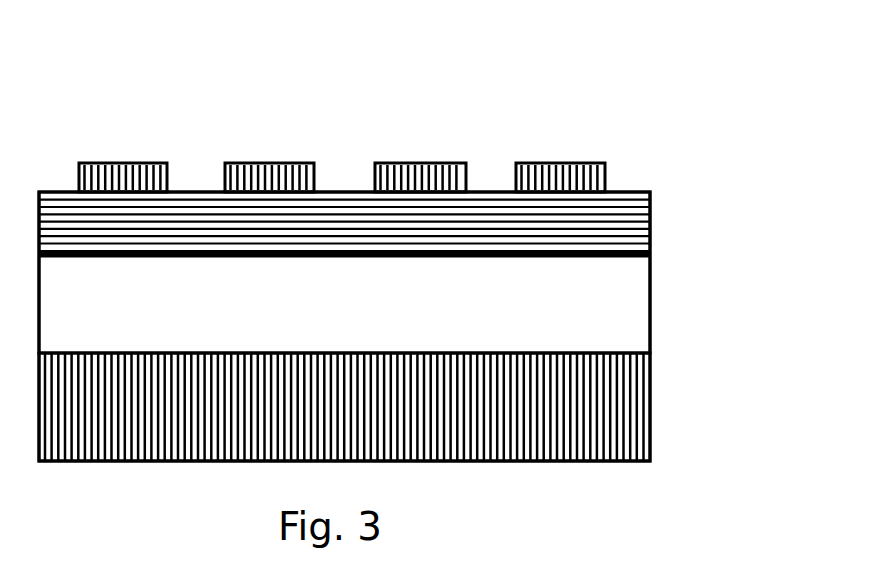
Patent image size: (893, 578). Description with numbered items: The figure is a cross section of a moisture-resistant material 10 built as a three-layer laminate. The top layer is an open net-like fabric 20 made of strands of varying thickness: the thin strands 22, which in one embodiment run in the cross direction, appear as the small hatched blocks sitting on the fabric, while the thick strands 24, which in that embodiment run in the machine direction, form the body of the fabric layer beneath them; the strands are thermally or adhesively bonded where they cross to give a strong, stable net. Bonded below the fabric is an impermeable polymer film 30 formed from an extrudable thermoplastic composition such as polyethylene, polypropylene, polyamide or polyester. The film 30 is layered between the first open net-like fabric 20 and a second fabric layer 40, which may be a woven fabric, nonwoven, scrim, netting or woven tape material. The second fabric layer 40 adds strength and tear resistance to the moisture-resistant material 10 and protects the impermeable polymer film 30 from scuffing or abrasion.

The moisture-resistant material 10 is at (220, 127).
The open net-like fabric 20 is at (428, 161).
The thin strands 22 is at (446, 164).
The thick strands 24 is at (619, 204).
The impermeable polymer film 30 is at (620, 300).
The second fabric layer 40 is at (620, 406).